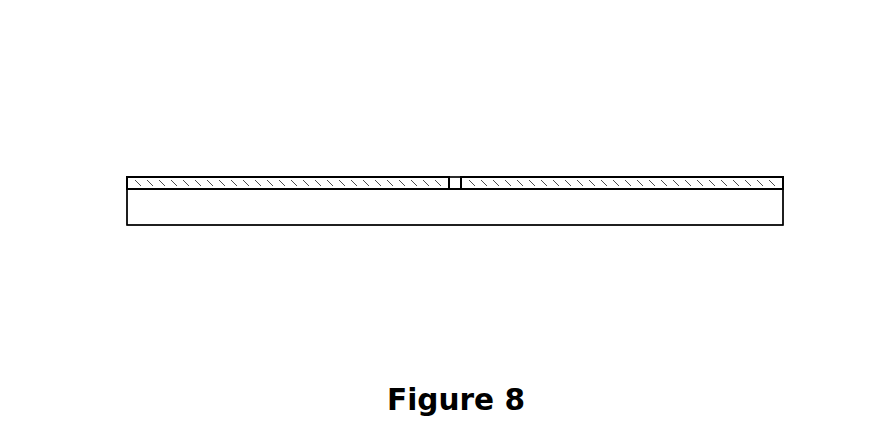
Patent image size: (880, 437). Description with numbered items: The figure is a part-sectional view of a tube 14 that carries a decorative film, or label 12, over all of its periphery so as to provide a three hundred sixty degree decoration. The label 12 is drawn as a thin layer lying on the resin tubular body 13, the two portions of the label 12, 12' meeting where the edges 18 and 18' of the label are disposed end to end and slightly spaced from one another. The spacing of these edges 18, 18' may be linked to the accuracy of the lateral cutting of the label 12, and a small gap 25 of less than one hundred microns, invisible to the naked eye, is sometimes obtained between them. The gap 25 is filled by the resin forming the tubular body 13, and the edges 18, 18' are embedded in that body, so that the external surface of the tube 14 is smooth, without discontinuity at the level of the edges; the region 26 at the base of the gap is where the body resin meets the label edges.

The tube 14 is at (108, 115).
The label 12 is at (288, 146).
The second coating layer portion 12' is at (622, 133).
The tubular body 13 is at (283, 205).
The gap 25 is at (450, 153).
The edge 18 is at (433, 131).
The edge 18' is at (484, 131).
The exposed substrate surface 26 is at (457, 185).